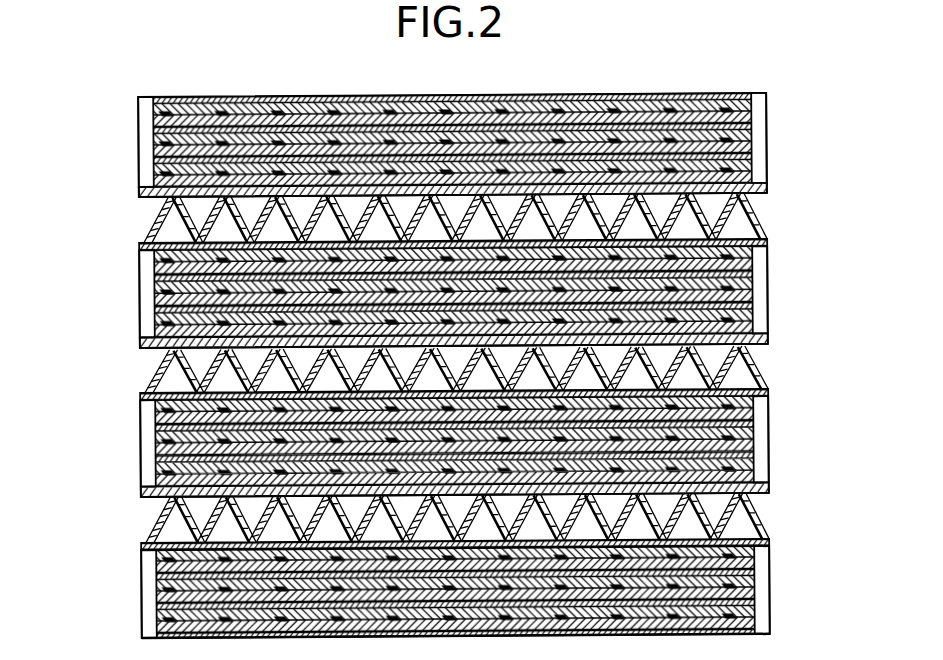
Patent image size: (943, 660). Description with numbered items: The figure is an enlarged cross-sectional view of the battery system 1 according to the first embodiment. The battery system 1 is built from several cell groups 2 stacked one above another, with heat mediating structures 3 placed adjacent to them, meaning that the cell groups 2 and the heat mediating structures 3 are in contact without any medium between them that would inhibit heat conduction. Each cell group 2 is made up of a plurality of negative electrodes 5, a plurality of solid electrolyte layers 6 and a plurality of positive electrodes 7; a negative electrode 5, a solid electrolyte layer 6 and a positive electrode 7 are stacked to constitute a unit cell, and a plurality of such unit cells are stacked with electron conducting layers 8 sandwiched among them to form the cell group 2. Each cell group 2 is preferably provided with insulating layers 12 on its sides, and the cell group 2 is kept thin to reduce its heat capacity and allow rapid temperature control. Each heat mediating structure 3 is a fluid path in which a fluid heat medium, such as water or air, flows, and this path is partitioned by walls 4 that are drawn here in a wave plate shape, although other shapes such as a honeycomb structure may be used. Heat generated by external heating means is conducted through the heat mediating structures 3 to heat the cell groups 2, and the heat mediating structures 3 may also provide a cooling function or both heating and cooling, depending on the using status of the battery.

The battery system 1 is at (87, 71).
The cell group 2 is at (777, 237).
The heat mediating structure 3 is at (777, 344).
The wall 4 is at (768, 492).
The negative electrode 5 is at (763, 482).
The solid electrolyte layer 6 is at (747, 475).
The positive electrode 7 is at (747, 463).
The electron conducting layer 8 is at (750, 448).
The insulating layer 12 is at (757, 127).